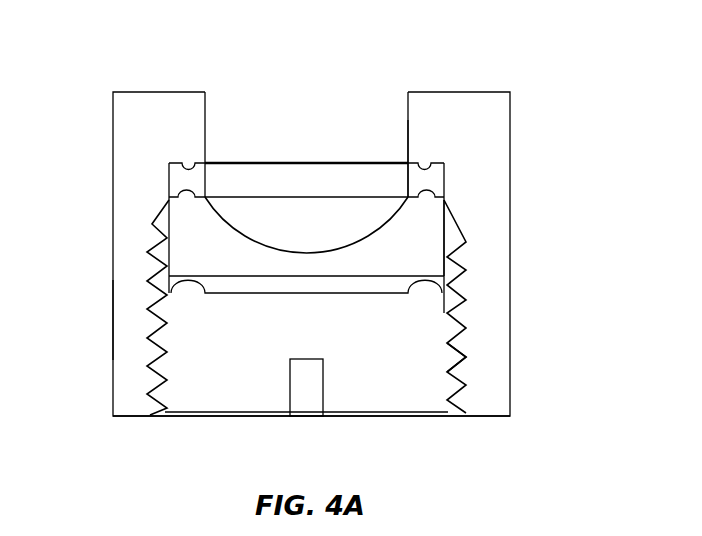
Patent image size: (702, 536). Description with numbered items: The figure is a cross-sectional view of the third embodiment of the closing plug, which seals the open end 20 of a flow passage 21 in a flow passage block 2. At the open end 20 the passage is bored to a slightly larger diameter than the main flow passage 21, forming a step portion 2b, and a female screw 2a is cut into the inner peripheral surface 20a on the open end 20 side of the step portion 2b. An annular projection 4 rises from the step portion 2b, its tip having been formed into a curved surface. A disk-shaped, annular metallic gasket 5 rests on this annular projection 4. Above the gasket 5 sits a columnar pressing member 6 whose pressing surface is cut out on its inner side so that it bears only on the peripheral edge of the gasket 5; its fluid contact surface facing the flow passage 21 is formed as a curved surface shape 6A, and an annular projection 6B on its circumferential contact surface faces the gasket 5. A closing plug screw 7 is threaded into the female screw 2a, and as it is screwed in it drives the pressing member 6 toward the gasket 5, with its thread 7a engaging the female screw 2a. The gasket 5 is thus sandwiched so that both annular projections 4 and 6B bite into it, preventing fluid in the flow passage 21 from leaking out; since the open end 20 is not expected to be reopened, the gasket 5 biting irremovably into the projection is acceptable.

The flow passage block 2 is at (463, 92).
The female screw 2a is at (125, 310).
The step portion 2b is at (404, 190).
The open end 20 is at (240, 418).
The inner peripheral surface 20a is at (447, 162).
The flow passage 21 is at (303, 112).
The annular projection 4 is at (170, 206).
The gasket 5 is at (168, 178).
The pressing member 6 is at (447, 232).
The curved surface shape 6A is at (248, 252).
The annular projection 6B is at (218, 158).
The closing plug screw 7 is at (448, 318).
The thread ridge 7a is at (447, 363).